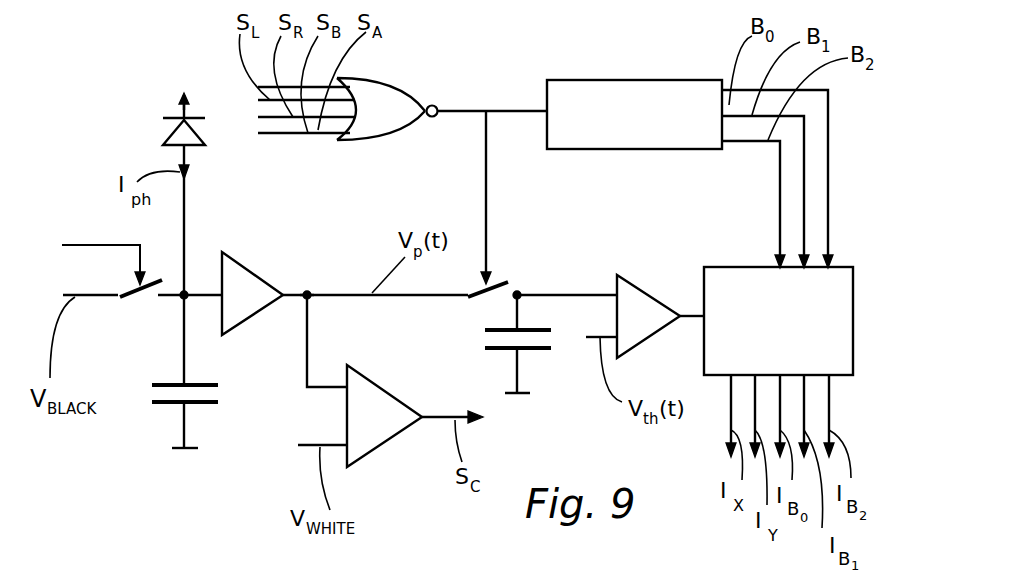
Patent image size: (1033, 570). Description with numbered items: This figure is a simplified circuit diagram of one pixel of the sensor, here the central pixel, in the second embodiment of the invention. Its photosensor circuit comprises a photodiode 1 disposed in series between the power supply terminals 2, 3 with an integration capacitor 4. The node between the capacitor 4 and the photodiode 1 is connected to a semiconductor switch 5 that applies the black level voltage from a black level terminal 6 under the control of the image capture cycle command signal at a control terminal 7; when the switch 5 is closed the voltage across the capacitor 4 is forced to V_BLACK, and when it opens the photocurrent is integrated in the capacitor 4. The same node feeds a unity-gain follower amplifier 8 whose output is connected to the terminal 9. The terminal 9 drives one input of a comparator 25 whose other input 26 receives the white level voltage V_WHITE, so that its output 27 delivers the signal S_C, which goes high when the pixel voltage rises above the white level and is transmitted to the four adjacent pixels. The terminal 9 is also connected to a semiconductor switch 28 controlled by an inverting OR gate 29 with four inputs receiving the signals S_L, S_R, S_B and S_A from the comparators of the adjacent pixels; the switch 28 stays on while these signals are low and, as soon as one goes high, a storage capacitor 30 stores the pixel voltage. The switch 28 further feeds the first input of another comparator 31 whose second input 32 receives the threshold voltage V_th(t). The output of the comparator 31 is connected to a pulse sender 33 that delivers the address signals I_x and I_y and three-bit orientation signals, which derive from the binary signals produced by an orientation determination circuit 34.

The photodiode 1 is at (170, 135).
The power supply terminal 2 is at (187, 100).
The power supply terminal 3 is at (184, 455).
The integration capacitor 4 is at (172, 383).
The semiconductor switch 5 is at (127, 303).
The black level terminal 6 is at (85, 295).
The control terminal 7 is at (100, 245).
The follower amplifier 8 is at (236, 293).
The output terminal 9 is at (307, 292).
The comparator 25 is at (372, 386).
The comparator input 26 is at (298, 447).
The comparator output 27 is at (438, 420).
The semiconductor switch 28 is at (515, 255).
The inverting OR gate 29 is at (385, 105).
The storage capacitor 30 is at (497, 352).
The comparator 31 is at (652, 316).
The comparator input 32 is at (588, 337).
The pulse sender 33 is at (740, 300).
The orientation determination circuit 34 is at (567, 100).